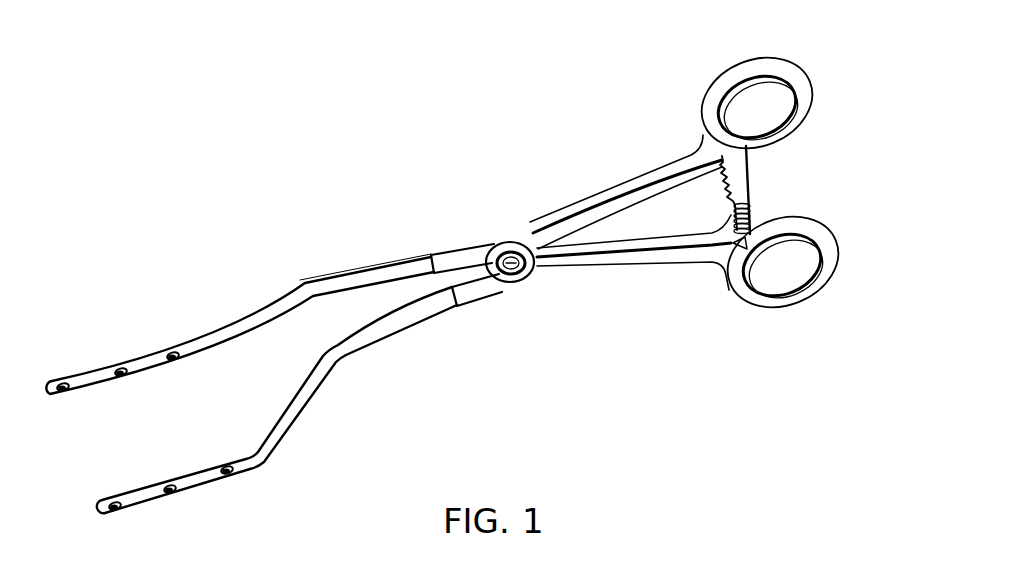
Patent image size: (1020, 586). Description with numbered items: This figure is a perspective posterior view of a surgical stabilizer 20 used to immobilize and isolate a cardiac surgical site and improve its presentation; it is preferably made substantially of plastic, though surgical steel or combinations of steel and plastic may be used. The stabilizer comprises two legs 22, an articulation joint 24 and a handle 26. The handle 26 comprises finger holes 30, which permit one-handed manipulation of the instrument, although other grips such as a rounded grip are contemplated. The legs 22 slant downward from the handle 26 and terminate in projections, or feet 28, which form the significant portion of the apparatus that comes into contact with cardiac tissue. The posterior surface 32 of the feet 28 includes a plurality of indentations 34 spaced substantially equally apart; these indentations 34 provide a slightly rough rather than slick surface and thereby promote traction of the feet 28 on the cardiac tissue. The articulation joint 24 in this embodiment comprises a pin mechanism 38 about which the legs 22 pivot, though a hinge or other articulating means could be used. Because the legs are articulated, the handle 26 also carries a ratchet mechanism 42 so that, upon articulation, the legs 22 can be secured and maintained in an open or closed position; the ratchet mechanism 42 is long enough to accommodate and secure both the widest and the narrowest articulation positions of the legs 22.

The surgical stabilizer 20 is at (353, 226).
The legs 22 is at (398, 322).
The articulation joint 24 is at (553, 278).
The handle 26 is at (768, 32).
The feet 28 is at (222, 358).
The finger holes 30 is at (800, 90).
The posterior surface 32 is at (137, 362).
The indentations 34 is at (117, 512).
The pin mechanism 38 is at (510, 256).
The ratchet mechanism 42 is at (752, 197).